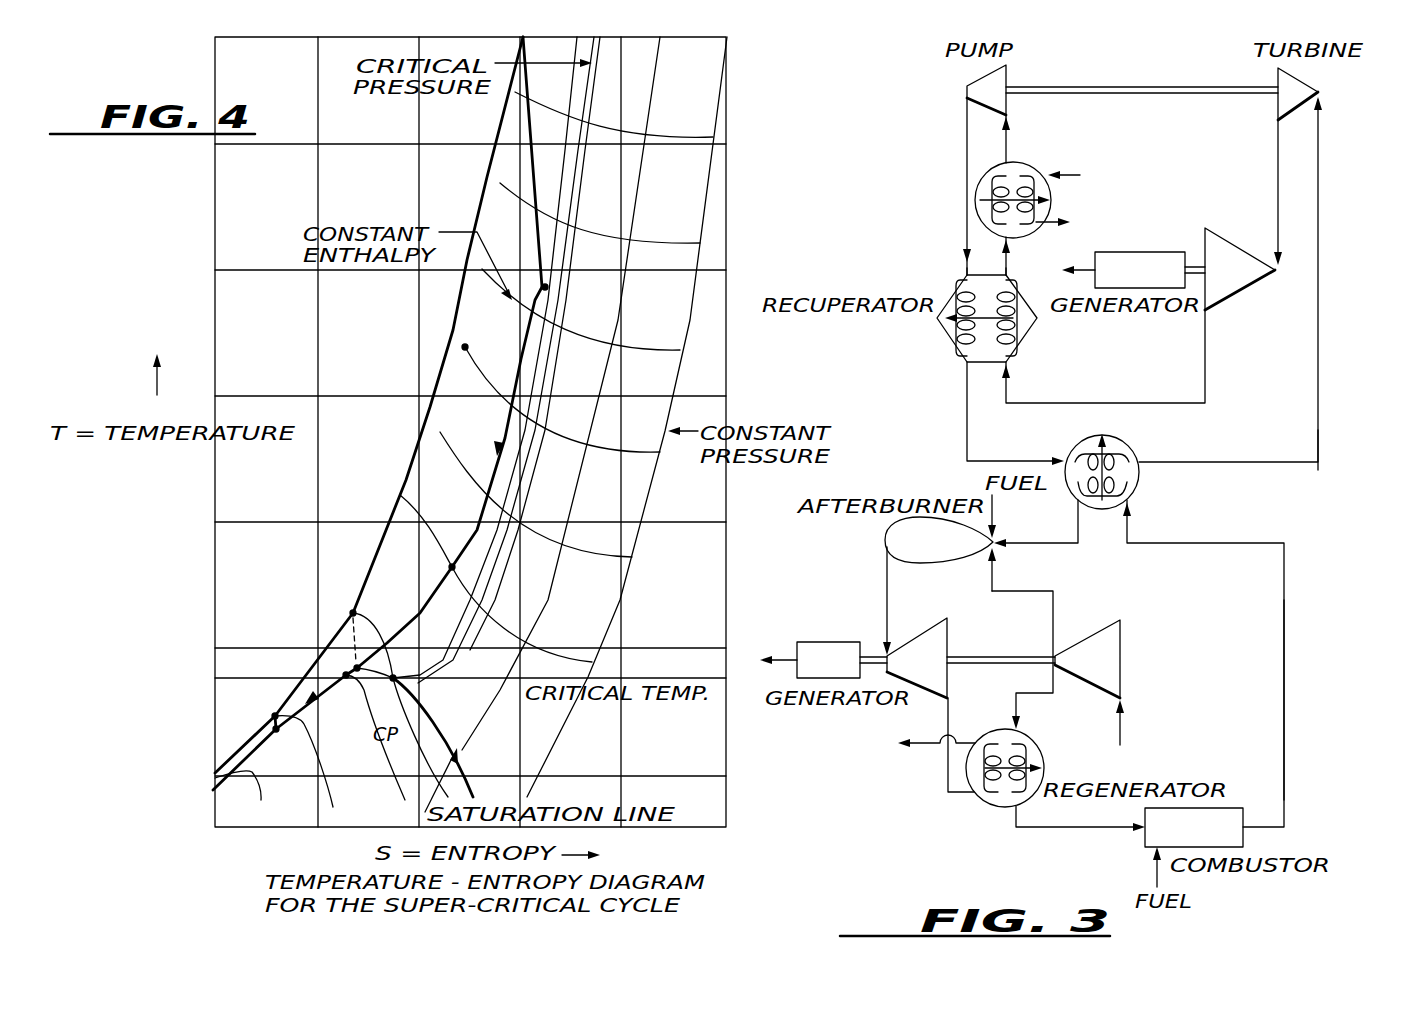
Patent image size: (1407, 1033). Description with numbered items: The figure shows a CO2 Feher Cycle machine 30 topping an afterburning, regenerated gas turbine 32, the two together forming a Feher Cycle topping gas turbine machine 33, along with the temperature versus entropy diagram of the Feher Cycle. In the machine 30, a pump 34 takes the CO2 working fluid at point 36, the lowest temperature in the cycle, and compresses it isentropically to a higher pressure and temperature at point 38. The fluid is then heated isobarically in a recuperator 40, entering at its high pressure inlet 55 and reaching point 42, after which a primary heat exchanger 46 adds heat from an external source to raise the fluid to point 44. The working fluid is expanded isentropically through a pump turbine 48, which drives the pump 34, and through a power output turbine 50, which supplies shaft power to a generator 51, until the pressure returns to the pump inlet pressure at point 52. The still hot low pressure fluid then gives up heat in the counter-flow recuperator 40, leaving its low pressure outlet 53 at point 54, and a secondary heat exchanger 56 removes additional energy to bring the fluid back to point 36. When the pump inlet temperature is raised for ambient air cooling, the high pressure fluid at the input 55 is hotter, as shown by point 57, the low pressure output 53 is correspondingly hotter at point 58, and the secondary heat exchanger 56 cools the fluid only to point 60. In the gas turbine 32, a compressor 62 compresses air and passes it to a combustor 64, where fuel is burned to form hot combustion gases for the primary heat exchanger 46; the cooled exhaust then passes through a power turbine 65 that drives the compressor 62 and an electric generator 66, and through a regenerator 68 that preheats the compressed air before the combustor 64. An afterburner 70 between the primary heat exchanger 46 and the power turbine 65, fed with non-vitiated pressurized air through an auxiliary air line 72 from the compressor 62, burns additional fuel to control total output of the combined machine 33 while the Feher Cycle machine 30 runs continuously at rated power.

In FIG. 3, the Feher Cycle machine 30 is at (927, 262).
In FIG. 3, the gas turbine 32 is at (1304, 697).
In FIG. 3, the Feher Cycle topping gas turbine machine 33 is at (1364, 445).
In FIG. 3, the pump 34 is at (966, 88).
In FIG. 4, the point 36 is at (276, 729).
In FIG. 4, the point 38 is at (275, 716).
In FIG. 3, the recuperator 40 is at (948, 342).
In FIG. 4, the point 42 is at (465, 347).
In FIG. 4, the point 44 is at (521, 37).
In FIG. 3, the primary heat exchanger 46 is at (1130, 446).
In FIG. 3, the pump turbine 48 is at (1320, 90).
In FIG. 3, the power output turbine 50 is at (1228, 236).
In FIG. 3, the generator 51 is at (1168, 252).
In FIG. 4, the point 52 is at (545, 287).
In FIG. 3, the low pressure outlet 53 is at (1010, 276).
In FIG. 4, the point 54 is at (346, 675).
In FIG. 3, the high pressure inlet 55 is at (966, 272).
In FIG. 3, the secondary heat exchanger 56 is at (1032, 167).
In FIG. 4, the point 57 is at (353, 613).
In FIG. 4, the point 58 is at (452, 567).
In FIG. 4, the point 60 is at (357, 668).
In FIG. 3, the compressor 62 is at (1124, 647).
In FIG. 3, the combustor 64 is at (1143, 845).
In FIG. 3, the power turbine 65 is at (950, 641).
In FIG. 3, the electric generator 66 is at (822, 642).
In FIG. 3, the regenerator 68 is at (995, 805).
In FIG. 3, the afterburner 70 is at (928, 563).
In FIG. 3, the auxiliary air line 72 is at (1052, 591).